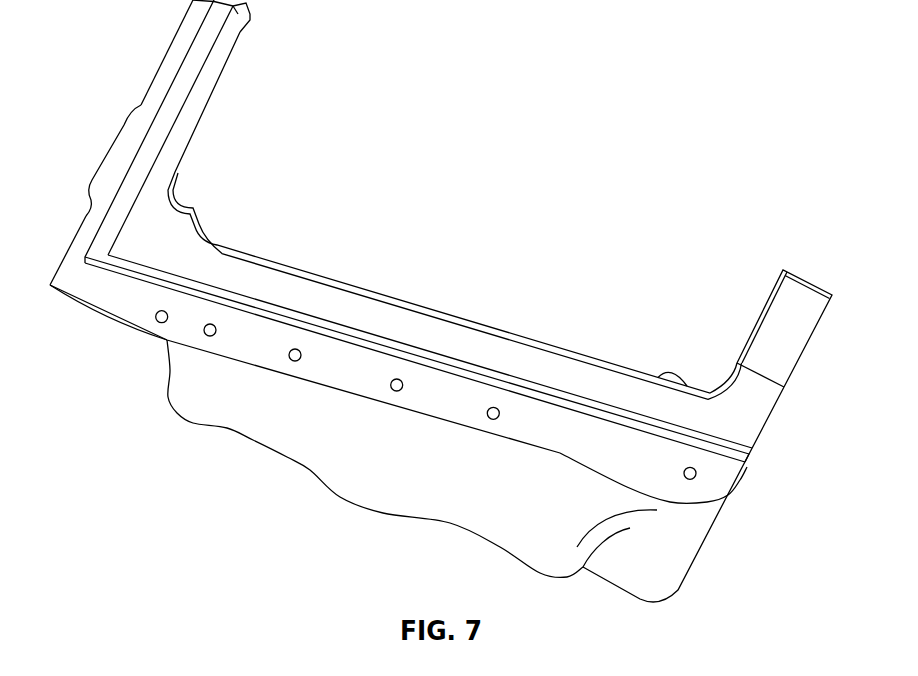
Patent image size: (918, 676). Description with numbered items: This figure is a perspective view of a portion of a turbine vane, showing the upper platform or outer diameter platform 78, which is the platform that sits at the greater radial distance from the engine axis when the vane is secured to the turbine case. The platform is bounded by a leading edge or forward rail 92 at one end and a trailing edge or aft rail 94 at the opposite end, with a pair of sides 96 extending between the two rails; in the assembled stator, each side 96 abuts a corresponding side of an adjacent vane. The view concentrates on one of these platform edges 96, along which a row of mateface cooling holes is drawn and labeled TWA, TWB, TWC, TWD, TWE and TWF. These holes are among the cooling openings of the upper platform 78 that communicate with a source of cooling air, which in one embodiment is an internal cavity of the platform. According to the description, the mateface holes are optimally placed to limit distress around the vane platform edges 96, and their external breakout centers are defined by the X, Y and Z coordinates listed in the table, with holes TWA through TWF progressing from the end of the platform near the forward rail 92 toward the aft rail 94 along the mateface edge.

The upper platform or outer diameter platform 78 is at (521, 91).
The leading edge or forward rail 92 is at (770, 421).
The trailing edge or aft rail 94 is at (108, 160).
The sides 96 is at (543, 365).
The mateface cooling hole TWA is at (156, 317).
The mateface cooling hole TWB is at (204, 331).
The mateface cooling hole TWC is at (289, 356).
The mateface cooling hole TWD is at (391, 385).
The mateface cooling hole TWE is at (487, 414).
The mateface cooling hole TWF is at (696, 475).